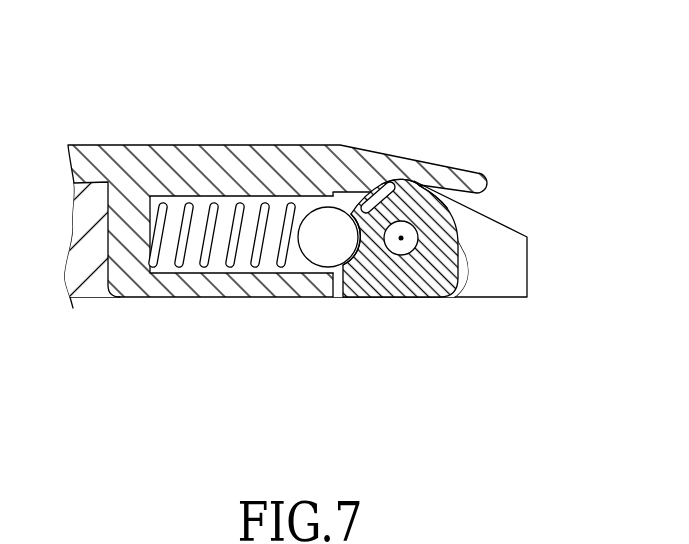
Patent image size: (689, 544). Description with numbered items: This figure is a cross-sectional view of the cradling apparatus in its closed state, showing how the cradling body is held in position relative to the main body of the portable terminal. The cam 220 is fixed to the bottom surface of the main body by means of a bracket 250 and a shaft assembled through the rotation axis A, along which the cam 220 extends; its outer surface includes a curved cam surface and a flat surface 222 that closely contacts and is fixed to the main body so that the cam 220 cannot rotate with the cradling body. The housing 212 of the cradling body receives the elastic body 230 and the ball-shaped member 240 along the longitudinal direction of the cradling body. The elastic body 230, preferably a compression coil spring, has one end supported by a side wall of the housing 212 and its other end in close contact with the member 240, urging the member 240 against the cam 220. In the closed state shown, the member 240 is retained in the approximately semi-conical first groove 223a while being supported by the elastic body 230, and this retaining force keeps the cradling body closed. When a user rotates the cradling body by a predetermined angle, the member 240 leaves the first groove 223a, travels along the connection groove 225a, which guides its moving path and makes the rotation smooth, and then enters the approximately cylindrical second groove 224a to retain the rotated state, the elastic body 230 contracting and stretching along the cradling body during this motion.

The cam 220 is at (437, 311).
The bracket 250 is at (100, 286).
The housing 212 is at (240, 287).
The elastic body 230 is at (205, 273).
The member 240 is at (280, 133).
The flat surface 222 is at (393, 297).
The first groove 223a is at (367, 242).
The connection groove 225a is at (356, 212).
The second groove 224a is at (417, 180).
The rotation axis A is at (401, 238).